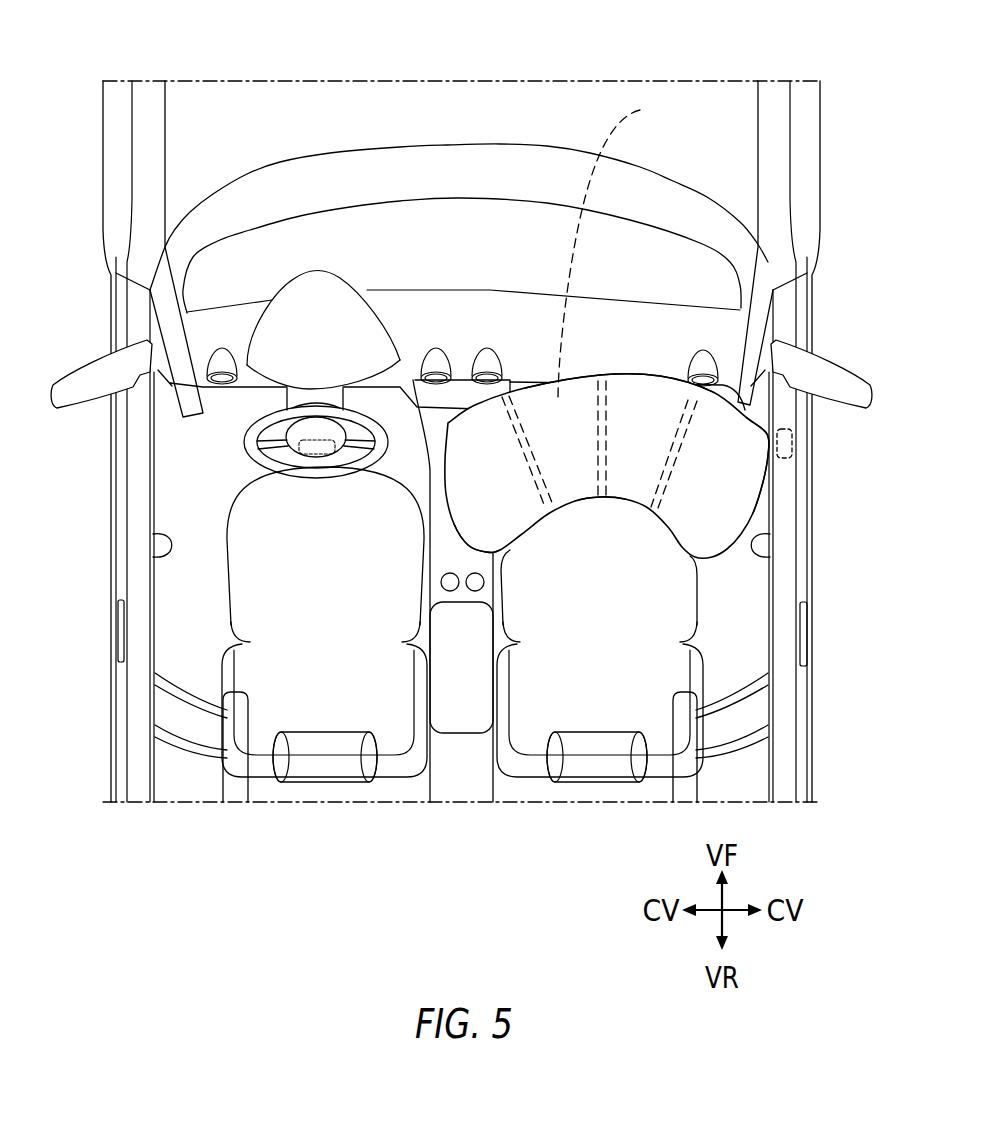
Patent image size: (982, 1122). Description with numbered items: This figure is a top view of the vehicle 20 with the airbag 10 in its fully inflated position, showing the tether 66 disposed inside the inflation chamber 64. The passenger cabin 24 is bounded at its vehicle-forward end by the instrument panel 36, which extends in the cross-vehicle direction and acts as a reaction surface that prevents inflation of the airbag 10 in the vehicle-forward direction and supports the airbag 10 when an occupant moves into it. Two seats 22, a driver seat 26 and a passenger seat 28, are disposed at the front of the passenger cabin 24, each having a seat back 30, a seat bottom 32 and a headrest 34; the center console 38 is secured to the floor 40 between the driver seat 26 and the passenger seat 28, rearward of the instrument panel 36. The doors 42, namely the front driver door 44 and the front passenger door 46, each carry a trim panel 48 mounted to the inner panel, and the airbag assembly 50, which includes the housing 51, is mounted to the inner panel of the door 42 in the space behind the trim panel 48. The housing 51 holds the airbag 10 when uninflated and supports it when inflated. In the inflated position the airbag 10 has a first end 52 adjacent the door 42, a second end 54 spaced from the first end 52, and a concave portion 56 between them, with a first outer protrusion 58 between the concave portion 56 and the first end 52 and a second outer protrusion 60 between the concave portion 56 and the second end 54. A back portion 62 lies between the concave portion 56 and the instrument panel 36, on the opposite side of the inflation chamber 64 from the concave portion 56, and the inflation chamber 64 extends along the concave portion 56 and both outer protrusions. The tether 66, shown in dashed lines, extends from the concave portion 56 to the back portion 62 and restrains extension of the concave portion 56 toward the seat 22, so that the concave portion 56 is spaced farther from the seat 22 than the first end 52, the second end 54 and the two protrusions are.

The airbag 10 is at (670, 374).
The vehicle 20 is at (203, 103).
The seat 22 is at (461, 696).
The passenger cabin 24 is at (501, 235).
The driver seat 26 is at (228, 604).
The passenger seat 28 is at (655, 610).
The seat back 30 is at (263, 765).
The seat bottom 32 is at (461, 769).
The headrest 34 is at (333, 762).
The instrument panel 36 is at (625, 297).
The center console 38 is at (465, 733).
The floor 40 is at (482, 632).
The door 42 is at (463, 441).
The front driver door 44 is at (108, 535).
The front passenger door 46 is at (817, 533).
The trim panel 48 is at (153, 546).
The airbag assembly 50 is at (756, 411).
The housing 51 is at (795, 440).
The first end 52 is at (710, 557).
The second end 54 is at (503, 551).
The concave portion 56 is at (590, 500).
The first outer protrusion 58 is at (762, 503).
The second outer protrusion 60 is at (413, 407).
The back portion 62 is at (622, 378).
The inflation chamber 64 is at (614, 247).
The tether 66 is at (515, 440).